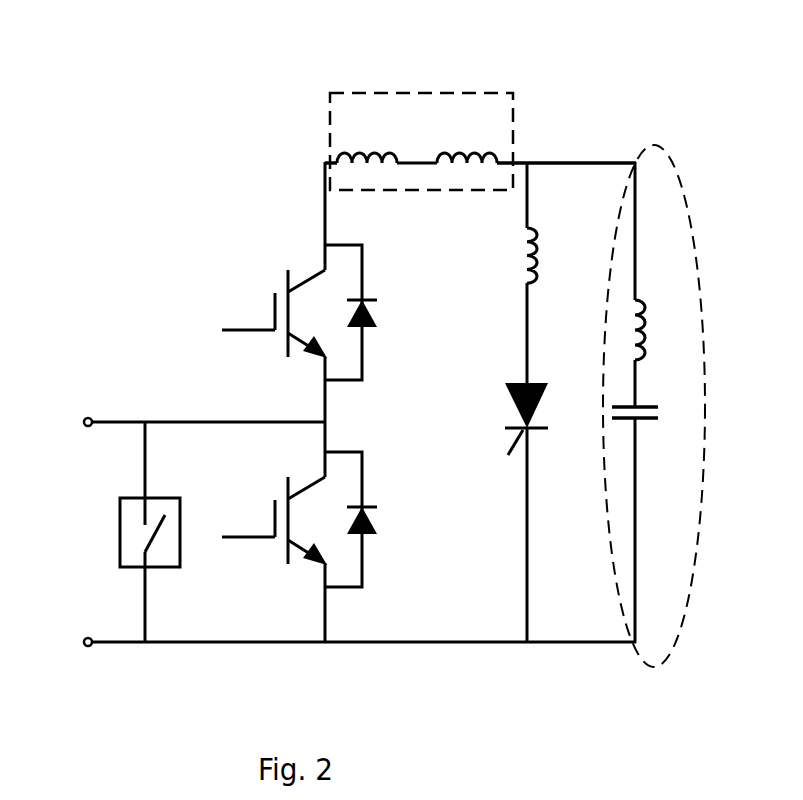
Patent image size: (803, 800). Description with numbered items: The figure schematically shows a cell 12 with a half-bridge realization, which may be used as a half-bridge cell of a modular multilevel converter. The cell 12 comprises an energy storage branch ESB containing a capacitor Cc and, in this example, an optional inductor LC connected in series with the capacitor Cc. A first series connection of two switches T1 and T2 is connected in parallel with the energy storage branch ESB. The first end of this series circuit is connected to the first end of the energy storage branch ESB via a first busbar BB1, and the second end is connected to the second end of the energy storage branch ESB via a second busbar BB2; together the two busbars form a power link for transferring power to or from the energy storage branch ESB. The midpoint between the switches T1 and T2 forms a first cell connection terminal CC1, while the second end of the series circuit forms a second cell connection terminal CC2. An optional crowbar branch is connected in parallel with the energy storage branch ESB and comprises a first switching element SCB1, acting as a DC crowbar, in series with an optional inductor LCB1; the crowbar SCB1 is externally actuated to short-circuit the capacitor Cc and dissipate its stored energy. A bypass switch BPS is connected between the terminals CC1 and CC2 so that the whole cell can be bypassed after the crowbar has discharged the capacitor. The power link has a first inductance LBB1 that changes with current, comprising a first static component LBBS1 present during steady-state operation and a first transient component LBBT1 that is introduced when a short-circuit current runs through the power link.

The cell 12 is at (657, 68).
The first cell connection terminal CC1 is at (65, 403).
The second cell connection terminal CC2 is at (51, 649).
The bypass switch BPS is at (122, 532).
The switch T1 is at (299, 312).
The switch T2 is at (299, 519).
The first inductance LBB1 is at (421, 125).
The first transient component LBBT1 is at (376, 143).
The first static component LBBS1 is at (467, 143).
The first busbar BB1 is at (516, 162).
The second busbar BB2 is at (364, 661).
The inductor LCB1 is at (486, 255).
The first switching element SCB1 is at (489, 419).
The energy storage branch ESB is at (670, 406).
The inductor LC is at (662, 330).
The capacitor Cc is at (655, 417).